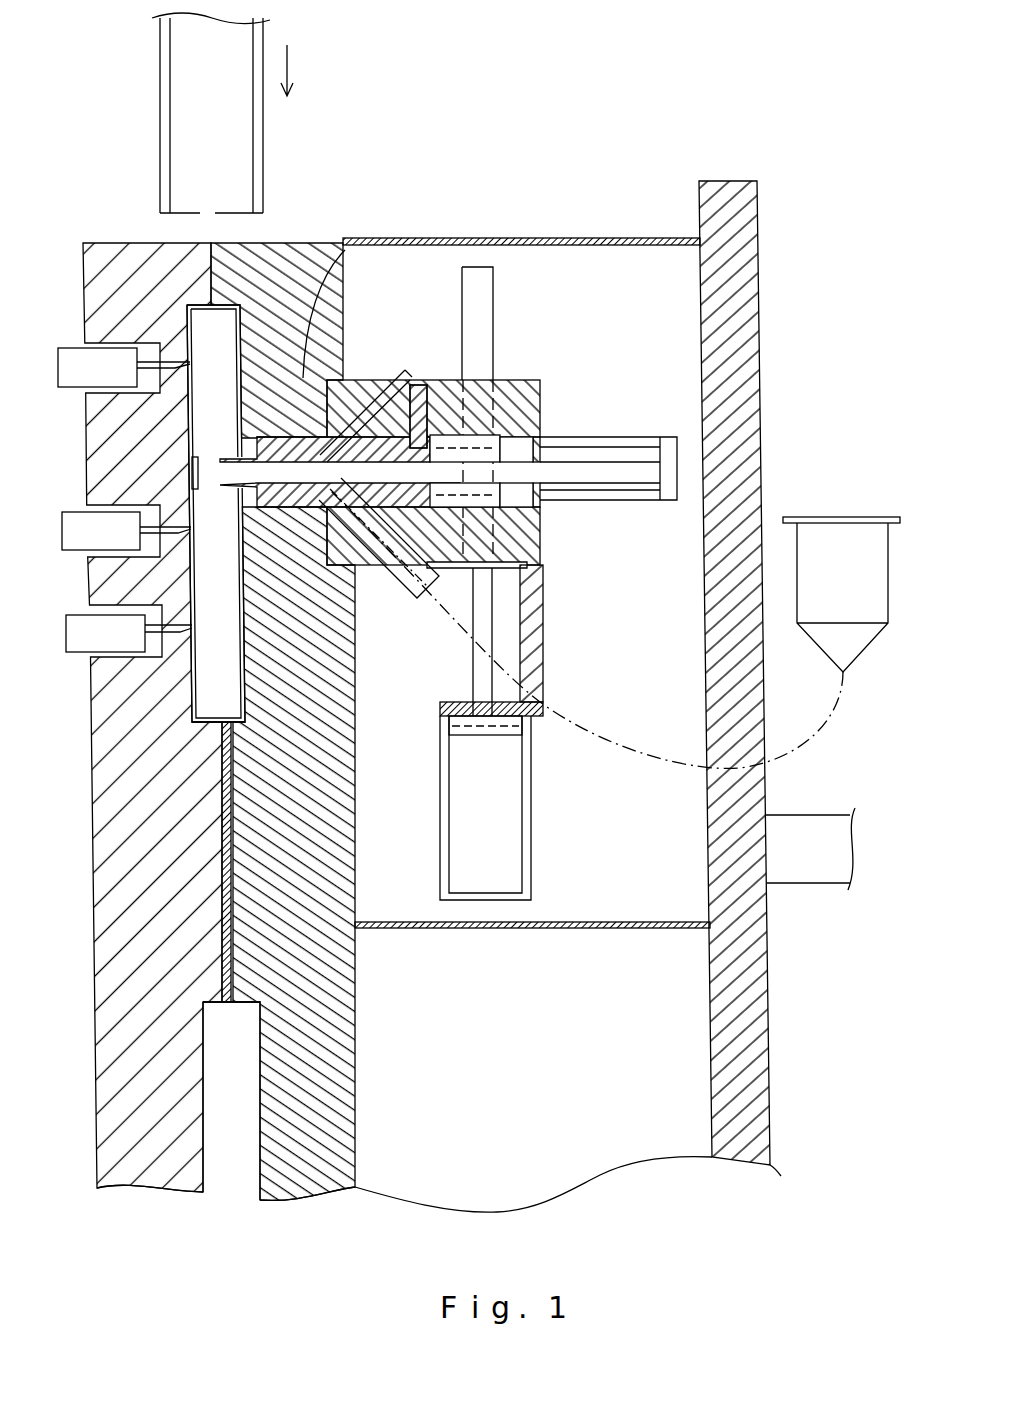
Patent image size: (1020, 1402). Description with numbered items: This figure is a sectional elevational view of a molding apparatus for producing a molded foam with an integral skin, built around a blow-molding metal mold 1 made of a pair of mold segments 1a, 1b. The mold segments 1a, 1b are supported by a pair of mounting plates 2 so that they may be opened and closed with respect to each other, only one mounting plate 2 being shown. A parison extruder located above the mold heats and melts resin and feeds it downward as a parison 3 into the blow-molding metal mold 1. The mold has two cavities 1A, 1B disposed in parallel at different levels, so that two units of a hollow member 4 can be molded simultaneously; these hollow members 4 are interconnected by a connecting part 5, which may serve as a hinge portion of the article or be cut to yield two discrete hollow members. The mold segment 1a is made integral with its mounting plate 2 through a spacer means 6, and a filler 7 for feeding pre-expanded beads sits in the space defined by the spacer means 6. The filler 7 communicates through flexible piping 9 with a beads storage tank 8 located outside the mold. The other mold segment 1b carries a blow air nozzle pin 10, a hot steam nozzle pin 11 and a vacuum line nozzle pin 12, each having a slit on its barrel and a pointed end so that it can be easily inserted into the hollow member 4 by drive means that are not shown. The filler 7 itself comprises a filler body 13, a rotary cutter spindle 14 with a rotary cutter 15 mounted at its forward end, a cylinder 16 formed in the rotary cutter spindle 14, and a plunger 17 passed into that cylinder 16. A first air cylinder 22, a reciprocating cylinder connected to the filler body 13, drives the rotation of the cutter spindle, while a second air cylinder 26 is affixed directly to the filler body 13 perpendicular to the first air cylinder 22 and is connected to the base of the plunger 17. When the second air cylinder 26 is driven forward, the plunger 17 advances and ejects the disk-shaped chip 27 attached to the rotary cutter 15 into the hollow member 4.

The blow-molding metal mold 1 is at (262, 685).
The mold segment 1a is at (318, 268).
The mold segment 1b is at (118, 272).
The cavity 1A is at (238, 613).
The cavity 1B is at (248, 1139).
The mounting plate 2 is at (720, 318).
The parison 3 is at (262, 125).
The hollow member 4 is at (248, 725).
The connecting part 5 is at (222, 897).
The spacer means 6 is at (582, 238).
The filler 7 is at (422, 328).
The beads storage tank 8 is at (858, 588).
The flexible piping 9 is at (618, 742).
The blow air nozzle pin 10 is at (153, 360).
The hot steam nozzle pin 11 is at (160, 515).
The vacuum line nozzle pin 12 is at (150, 658).
The filler body 13 is at (525, 380).
The rotary cutter spindle 14 is at (542, 537).
The rotary cutter 15 is at (226, 458).
The cylinder 16 is at (357, 356).
The plunger 17 is at (352, 470).
The first air cylinder 22 is at (533, 860).
The second air cylinder 26 is at (640, 437).
The disk-shaped chip 27 is at (190, 462).